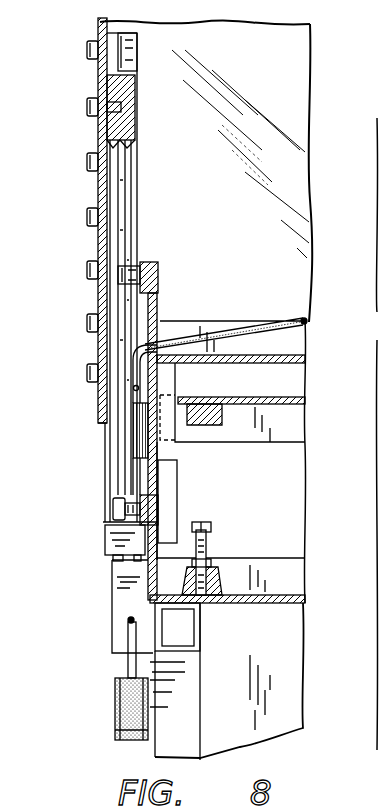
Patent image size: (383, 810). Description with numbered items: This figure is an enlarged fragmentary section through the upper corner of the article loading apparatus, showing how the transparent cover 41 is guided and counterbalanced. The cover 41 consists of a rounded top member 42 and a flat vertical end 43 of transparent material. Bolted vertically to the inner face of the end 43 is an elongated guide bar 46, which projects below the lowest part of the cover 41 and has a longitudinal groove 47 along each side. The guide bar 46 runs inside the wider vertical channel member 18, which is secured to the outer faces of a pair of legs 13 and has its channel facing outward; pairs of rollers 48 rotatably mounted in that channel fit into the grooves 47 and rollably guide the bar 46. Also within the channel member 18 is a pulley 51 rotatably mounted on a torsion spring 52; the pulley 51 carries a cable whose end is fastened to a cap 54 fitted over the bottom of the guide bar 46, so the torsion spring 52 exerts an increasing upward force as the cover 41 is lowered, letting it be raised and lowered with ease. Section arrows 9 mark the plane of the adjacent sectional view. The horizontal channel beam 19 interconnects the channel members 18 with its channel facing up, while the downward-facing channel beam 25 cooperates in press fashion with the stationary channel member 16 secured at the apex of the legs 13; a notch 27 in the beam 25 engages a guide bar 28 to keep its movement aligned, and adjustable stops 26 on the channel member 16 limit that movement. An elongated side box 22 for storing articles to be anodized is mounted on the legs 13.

The vertical end 43 is at (100, 28).
The rounded top member 42 is at (296, 58).
The transparent cover 41 is at (287, 103).
The guide bar 46 is at (137, 156).
The longitudinal groove 47 is at (124, 192).
The roller 48 is at (122, 268).
The channel member 18 is at (157, 305).
The section line 9 is at (157, 307).
The channel beam 19 is at (304, 345).
The notch 27 is at (182, 396).
The channel beam 25 is at (303, 432).
The pulley 51 is at (133, 434).
The torsion spring 52 is at (140, 482).
The guide bar 28 is at (158, 491).
The cap 54 is at (114, 543).
The adjustable stop 26 is at (210, 539).
The channel member 16 is at (285, 603).
The side box 22 is at (278, 690).
The leg 13 is at (190, 720).